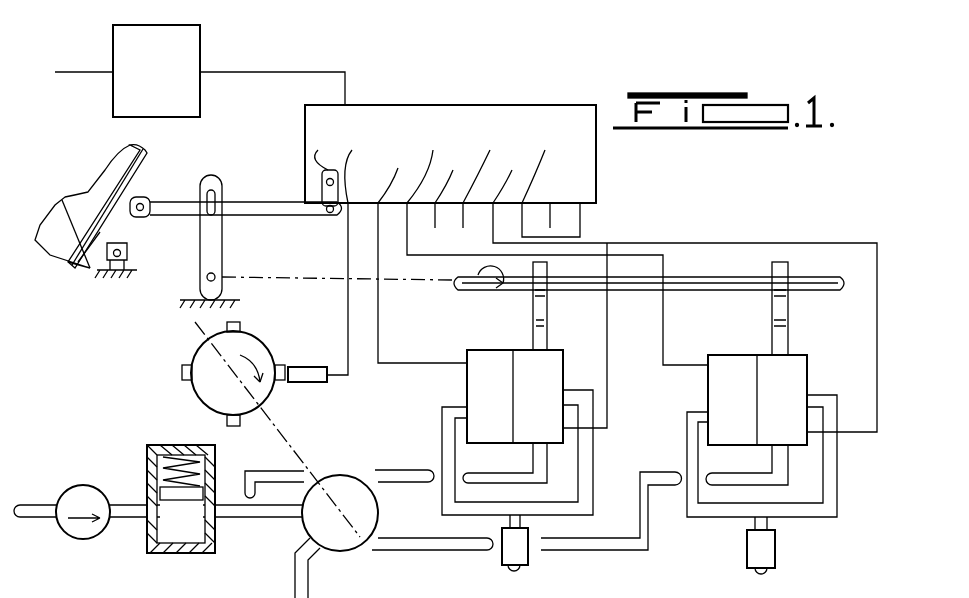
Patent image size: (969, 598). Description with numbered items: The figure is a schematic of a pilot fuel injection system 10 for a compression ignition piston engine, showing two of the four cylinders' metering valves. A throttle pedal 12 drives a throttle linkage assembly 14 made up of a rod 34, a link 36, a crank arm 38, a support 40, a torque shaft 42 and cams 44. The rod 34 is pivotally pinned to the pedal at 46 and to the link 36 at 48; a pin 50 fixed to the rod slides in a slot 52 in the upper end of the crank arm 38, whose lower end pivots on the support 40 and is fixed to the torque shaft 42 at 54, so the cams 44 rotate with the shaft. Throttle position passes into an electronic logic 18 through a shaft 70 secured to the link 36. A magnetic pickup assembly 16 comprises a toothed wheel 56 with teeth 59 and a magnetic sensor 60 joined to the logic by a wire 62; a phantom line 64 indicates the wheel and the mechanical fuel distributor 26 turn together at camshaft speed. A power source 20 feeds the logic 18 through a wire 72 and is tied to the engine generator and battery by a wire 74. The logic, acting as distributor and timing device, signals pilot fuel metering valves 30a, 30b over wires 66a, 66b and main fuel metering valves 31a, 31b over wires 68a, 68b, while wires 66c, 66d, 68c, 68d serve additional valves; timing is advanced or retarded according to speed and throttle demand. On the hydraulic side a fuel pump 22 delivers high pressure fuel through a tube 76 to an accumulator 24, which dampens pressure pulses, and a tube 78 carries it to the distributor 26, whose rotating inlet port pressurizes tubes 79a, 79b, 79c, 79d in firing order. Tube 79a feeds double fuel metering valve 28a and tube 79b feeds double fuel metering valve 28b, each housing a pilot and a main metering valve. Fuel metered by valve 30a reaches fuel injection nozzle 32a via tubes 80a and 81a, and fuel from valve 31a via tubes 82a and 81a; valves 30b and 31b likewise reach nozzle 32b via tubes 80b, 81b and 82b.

The pilot fuel injection system 10 is at (848, 212).
The throttle pedal 12 is at (140, 150).
The throttle linkage assembly 14 is at (245, 218).
The magnetic pickup assembly 16 is at (185, 360).
The electronic logic 18 is at (402, 104).
The power source 20 is at (203, 42).
The fuel pump 22 is at (90, 477).
The accumulator 24 is at (178, 437).
The mechanical fuel distributor 26 is at (342, 474).
The double fuel metering valve 28a is at (560, 348).
The double fuel metering valve 28b is at (706, 352).
The pilot fuel metering valve 30a is at (497, 398).
The pilot fuel metering valve 30b is at (740, 404).
The main fuel metering valve 31a is at (546, 398).
The main fuel metering valve 31b is at (790, 404).
The fuel injection nozzle 32a is at (532, 558).
The fuel injection nozzle 32b is at (745, 548).
The rod 34 is at (164, 200).
The link 36 is at (340, 210).
The crank arm 38 is at (222, 185).
The support 40 is at (195, 292).
The torque shaft 42 is at (458, 290).
The cams 44 is at (553, 268).
The pivot pin 46 is at (143, 216).
The pivot pin 48 is at (248, 277).
The pin 50 is at (212, 177).
The slot 52 is at (222, 205).
The fixed connection 54 is at (200, 277).
The toothed wheel 56 is at (255, 335).
The teeth 59 is at (182, 372).
The magnetic sensor 60 is at (303, 365).
The wire 62 is at (350, 300).
The phantom line 64 is at (270, 422).
The wire 66a is at (352, 251).
The wire 66b is at (422, 256).
The wire 66c is at (557, 246).
The wire 66d is at (458, 188).
The wire 68a is at (490, 178).
The wire 68b is at (685, 290).
The wire 68c is at (551, 182).
The wire 68d is at (584, 225).
The shaft 70 is at (320, 149).
The wire 72 is at (297, 72).
The wire 74 is at (82, 70).
The tube 76 is at (127, 520).
The tube 78 is at (255, 522).
The tube 79a is at (398, 468).
The tube 79b is at (402, 536).
The tube 79c is at (277, 463).
The tube 79d is at (312, 588).
The tube 80a is at (445, 400).
The tube 80b is at (688, 410).
The tube 81a is at (520, 522).
The tube 81b is at (770, 528).
The tube 82a is at (593, 458).
The tube 82b is at (838, 410).